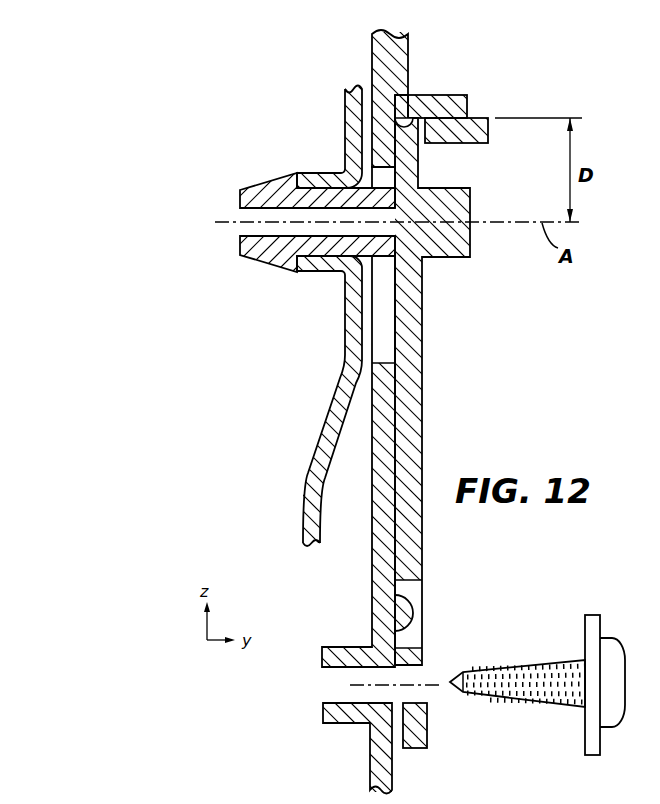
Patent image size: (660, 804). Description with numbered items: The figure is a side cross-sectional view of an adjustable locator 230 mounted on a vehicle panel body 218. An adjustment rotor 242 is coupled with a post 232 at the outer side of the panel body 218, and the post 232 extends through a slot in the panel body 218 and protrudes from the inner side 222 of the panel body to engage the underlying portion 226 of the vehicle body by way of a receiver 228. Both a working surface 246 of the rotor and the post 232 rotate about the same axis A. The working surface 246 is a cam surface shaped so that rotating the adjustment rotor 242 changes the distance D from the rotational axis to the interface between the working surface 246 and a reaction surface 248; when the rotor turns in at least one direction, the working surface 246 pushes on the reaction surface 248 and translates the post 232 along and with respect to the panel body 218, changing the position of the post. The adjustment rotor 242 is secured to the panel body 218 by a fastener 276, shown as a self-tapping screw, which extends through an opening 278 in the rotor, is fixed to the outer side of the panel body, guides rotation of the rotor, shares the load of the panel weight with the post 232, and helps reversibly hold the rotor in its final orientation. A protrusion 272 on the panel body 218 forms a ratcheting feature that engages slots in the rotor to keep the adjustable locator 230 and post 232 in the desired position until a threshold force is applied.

The panel body 218 is at (402, 55).
The inner side 222 is at (356, 107).
The underlying portion 226 is at (304, 488).
The receiver 228 is at (315, 272).
The adjustable locator 230 is at (488, 113).
The post 232 is at (322, 198).
The adjustment rotor 242 is at (419, 366).
The working surface 246 is at (451, 104).
The reaction surface 248 is at (420, 118).
The protrusion 272 is at (410, 616).
The fastener 276 is at (537, 707).
The opening 278 is at (350, 692).